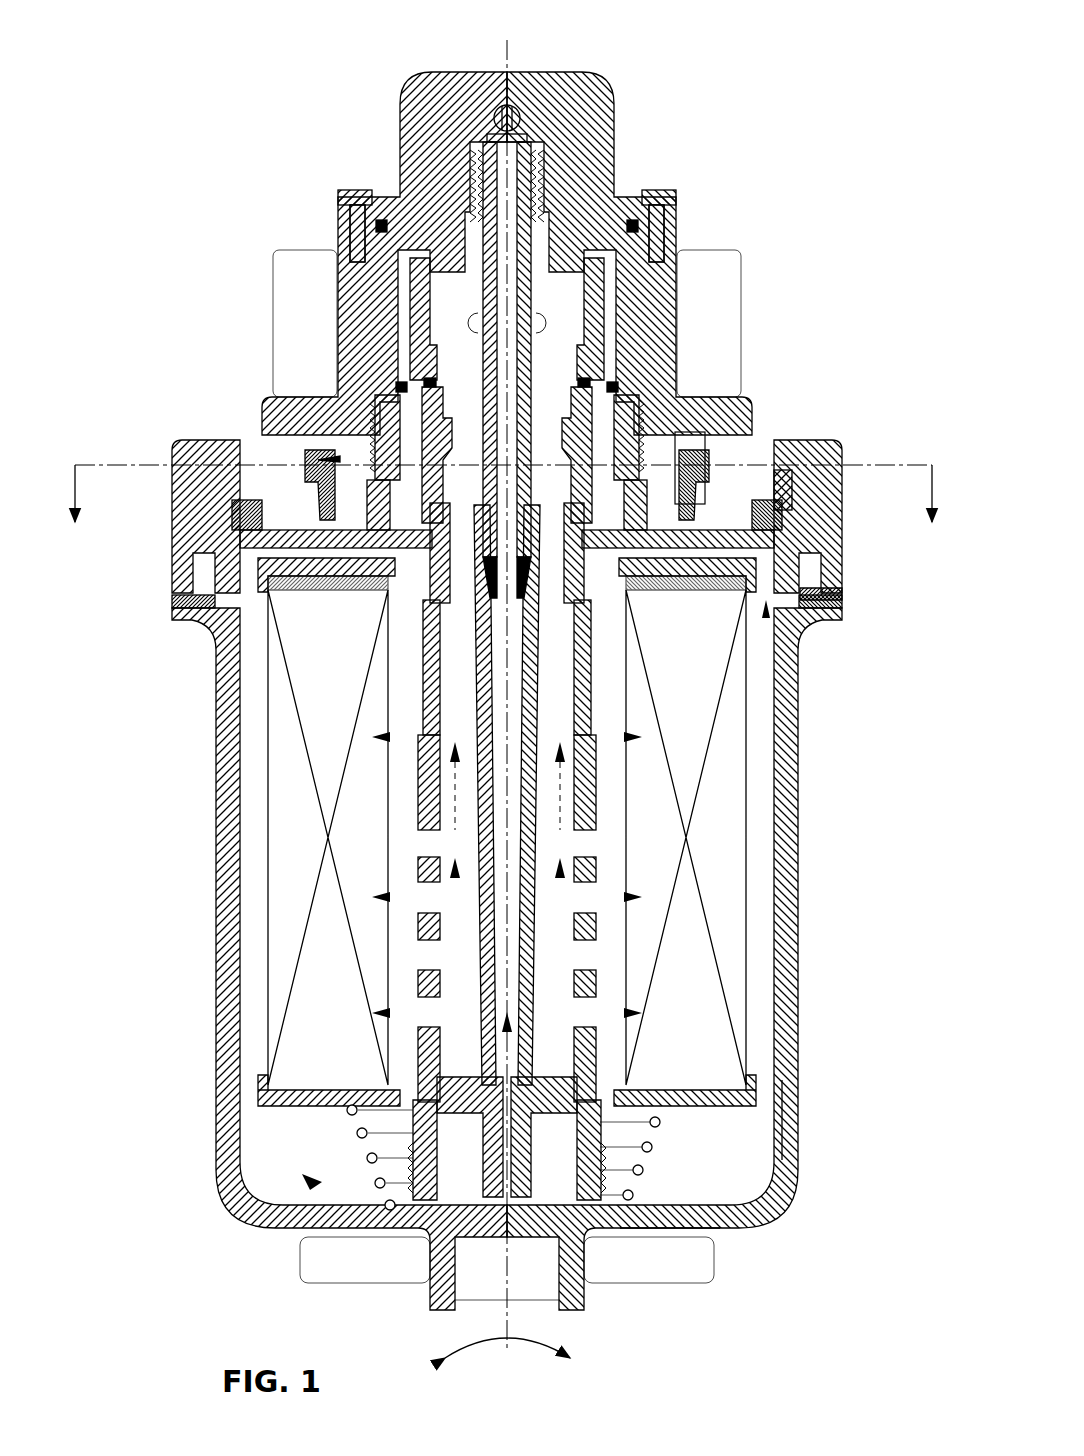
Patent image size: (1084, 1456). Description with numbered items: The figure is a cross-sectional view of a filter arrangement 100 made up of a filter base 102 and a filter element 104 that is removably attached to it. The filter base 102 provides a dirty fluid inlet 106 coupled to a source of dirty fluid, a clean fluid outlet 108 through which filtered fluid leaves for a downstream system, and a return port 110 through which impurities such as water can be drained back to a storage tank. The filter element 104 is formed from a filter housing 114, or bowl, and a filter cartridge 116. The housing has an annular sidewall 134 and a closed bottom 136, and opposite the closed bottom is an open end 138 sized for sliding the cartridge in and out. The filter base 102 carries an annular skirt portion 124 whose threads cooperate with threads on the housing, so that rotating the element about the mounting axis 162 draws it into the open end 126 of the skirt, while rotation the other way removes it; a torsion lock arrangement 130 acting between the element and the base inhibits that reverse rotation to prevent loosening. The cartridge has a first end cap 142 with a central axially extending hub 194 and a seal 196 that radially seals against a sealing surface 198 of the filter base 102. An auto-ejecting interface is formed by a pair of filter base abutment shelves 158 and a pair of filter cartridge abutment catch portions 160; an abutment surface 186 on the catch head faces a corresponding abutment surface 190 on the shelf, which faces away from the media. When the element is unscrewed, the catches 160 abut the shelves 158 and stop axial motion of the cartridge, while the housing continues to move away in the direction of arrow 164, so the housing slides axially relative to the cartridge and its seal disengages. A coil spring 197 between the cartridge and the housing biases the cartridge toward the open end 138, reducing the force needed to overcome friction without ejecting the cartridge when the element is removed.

The filter arrangement 100 is at (205, 72).
The filter base 102 is at (738, 118).
The filter element 104 is at (826, 906).
The fluid inlet 106 is at (626, 296).
The clean fluid outlet 108 is at (538, 322).
The return port 110 is at (535, 126).
The filter housing 114 is at (800, 966).
The filter cartridge 116 is at (770, 802).
The annular skirt portion 124 is at (213, 556).
The open end of annular skirt 126 is at (838, 592).
The torsion lock arrangement 130 is at (704, 505).
The annular sidewall 134 is at (794, 1112).
The closed bottom 136 is at (712, 1232).
The open end of filter housing 138 is at (792, 488).
The first end cap 142 is at (335, 542).
The filter base abutment shelves 158 is at (320, 468).
The filter cartridge abutment catch portions 160 is at (340, 462).
The mounting axis 162 is at (512, 1276).
The arrow 164 is at (178, 1312).
The abutment surface of head portion 186 is at (250, 496).
The abutment surface of filter base abutment shelf 190 is at (245, 440).
The central axially extending hub 194 is at (356, 573).
The seal 196 is at (372, 576).
The coil spring 197 is at (644, 1170).
The sealing surface 198 is at (338, 570).